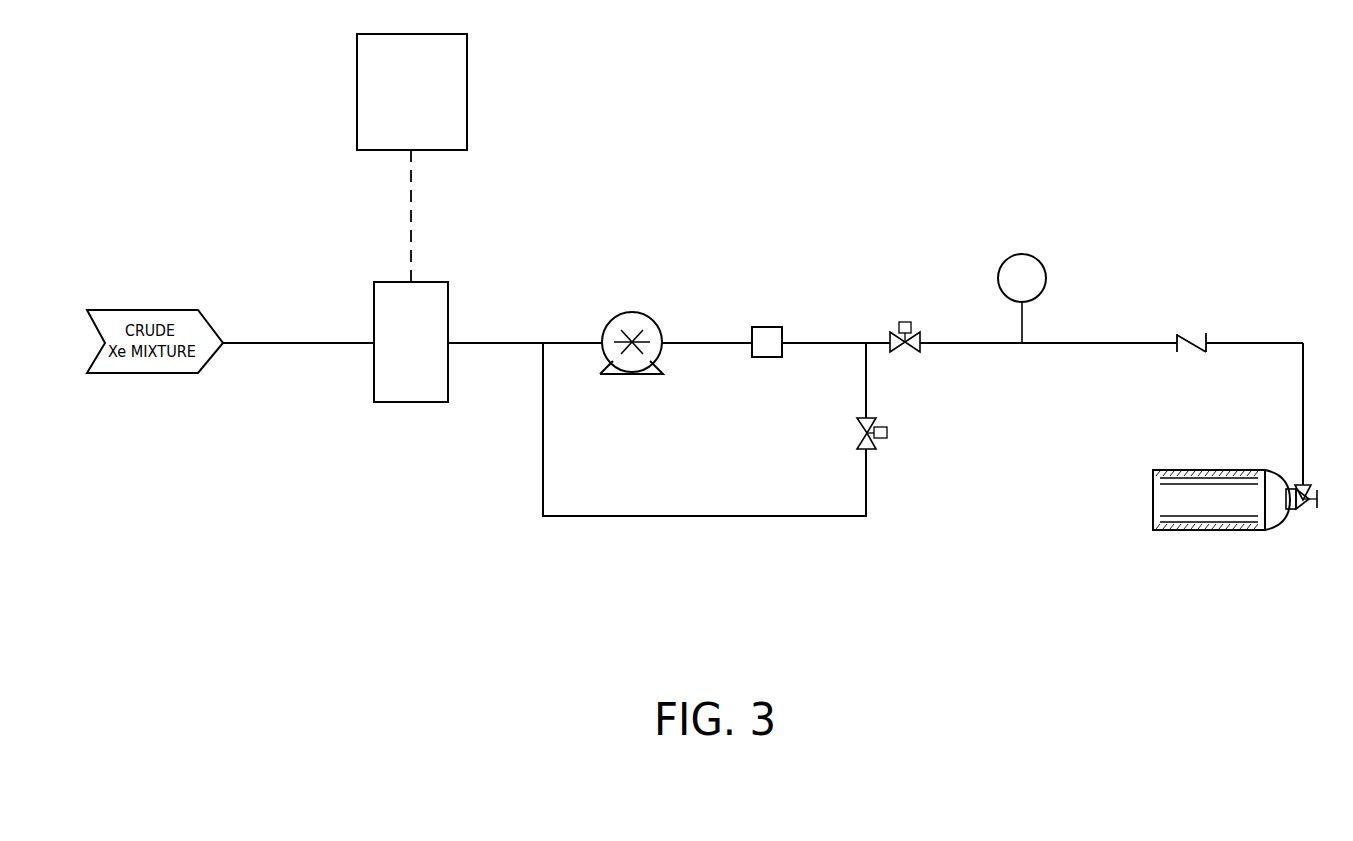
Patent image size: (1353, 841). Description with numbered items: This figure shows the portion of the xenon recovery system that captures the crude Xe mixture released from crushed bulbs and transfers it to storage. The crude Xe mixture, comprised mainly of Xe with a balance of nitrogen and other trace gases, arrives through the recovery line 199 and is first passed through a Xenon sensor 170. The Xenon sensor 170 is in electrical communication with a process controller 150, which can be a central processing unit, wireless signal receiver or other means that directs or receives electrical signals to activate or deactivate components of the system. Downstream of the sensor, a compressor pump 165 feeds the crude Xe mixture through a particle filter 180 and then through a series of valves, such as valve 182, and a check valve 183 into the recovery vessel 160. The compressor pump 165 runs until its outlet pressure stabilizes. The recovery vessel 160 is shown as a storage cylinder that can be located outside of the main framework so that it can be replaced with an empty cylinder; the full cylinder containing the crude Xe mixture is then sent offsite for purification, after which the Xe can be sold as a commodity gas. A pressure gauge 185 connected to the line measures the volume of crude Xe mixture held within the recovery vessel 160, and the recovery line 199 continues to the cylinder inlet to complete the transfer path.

The process controller 150 is at (412, 92).
The Xenon sensor 170 is at (411, 342).
The recovery line 199 is at (282, 344).
The compressor pump 165 is at (633, 330).
The particle filter 180 is at (766, 357).
The valve 182 is at (904, 352).
The pressure gauge 185 is at (1046, 283).
The check valve 183 is at (1195, 352).
The recovery vessel 160 is at (1195, 530).